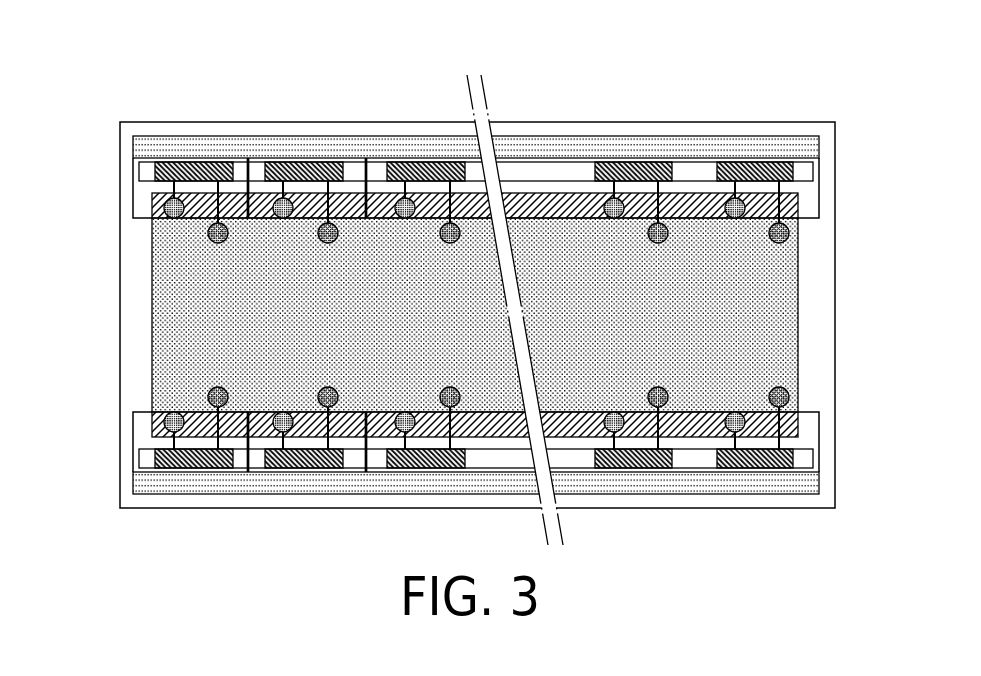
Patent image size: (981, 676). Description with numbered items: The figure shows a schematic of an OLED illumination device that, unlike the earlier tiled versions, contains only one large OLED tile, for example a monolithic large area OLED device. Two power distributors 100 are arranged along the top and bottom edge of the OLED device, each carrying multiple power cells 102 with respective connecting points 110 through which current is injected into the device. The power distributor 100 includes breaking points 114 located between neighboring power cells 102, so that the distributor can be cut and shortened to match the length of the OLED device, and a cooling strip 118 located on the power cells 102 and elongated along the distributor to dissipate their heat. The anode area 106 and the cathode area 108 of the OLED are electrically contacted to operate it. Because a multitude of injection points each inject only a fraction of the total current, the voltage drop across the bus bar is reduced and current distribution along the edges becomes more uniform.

The power distributor 100 is at (133, 197).
The power cells 102 is at (765, 170).
The anode area 106 is at (799, 203).
The cathode area 108 is at (765, 318).
The connecting points 110 is at (790, 233).
The breaking points 114 is at (386, 171).
The cooling strip 118 is at (522, 145).